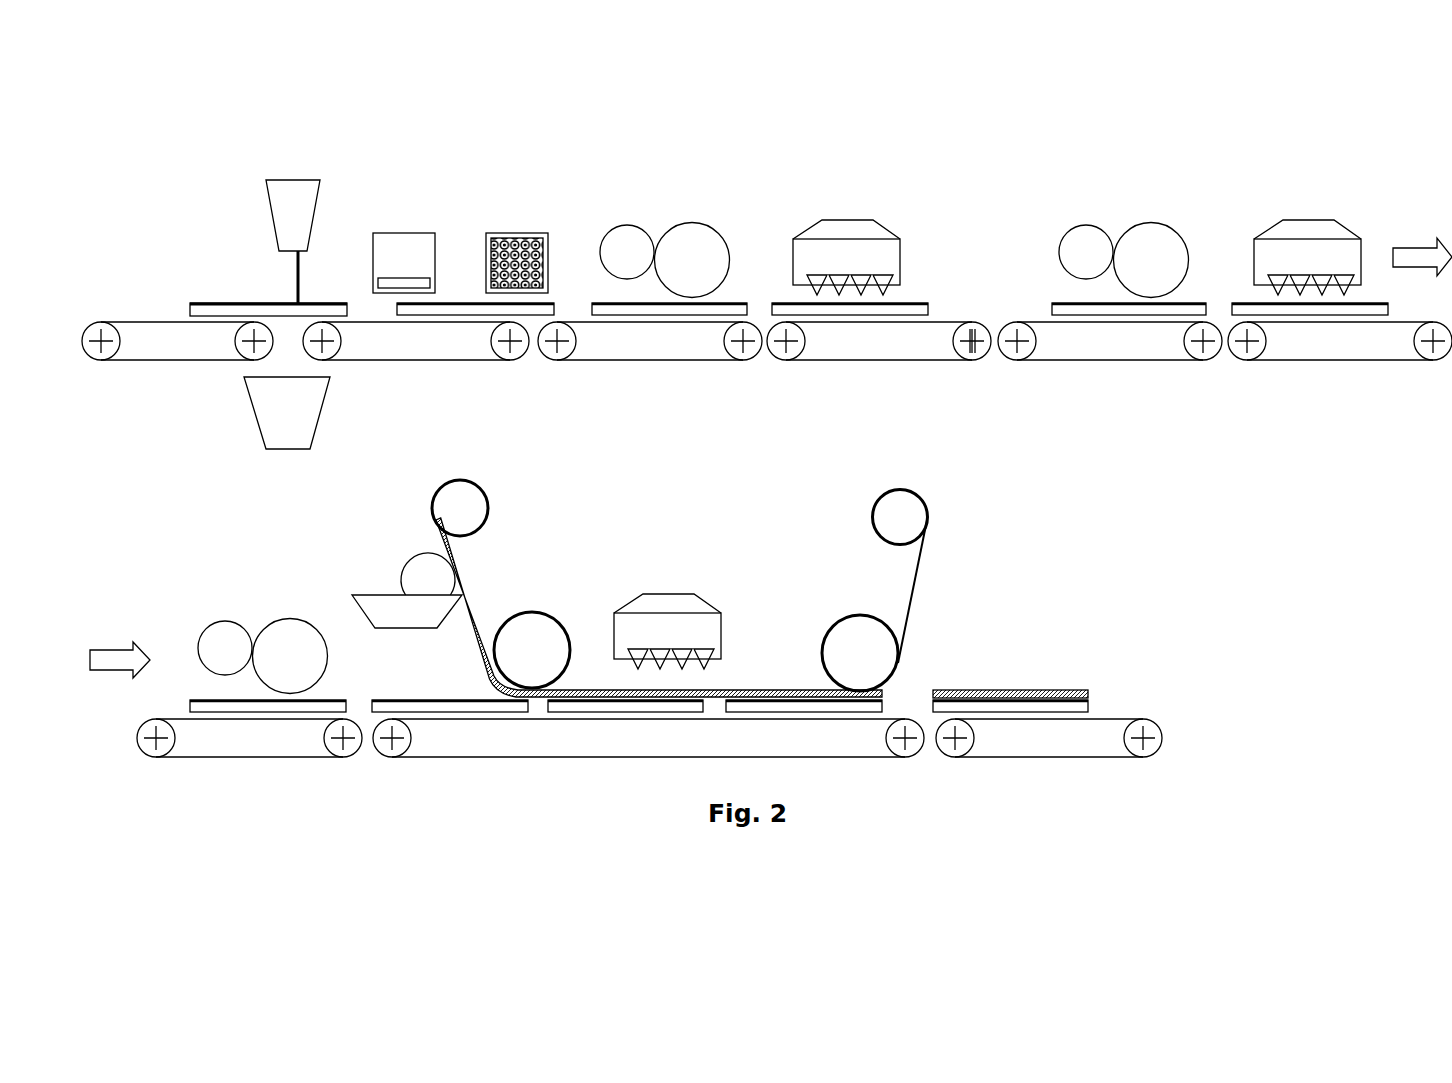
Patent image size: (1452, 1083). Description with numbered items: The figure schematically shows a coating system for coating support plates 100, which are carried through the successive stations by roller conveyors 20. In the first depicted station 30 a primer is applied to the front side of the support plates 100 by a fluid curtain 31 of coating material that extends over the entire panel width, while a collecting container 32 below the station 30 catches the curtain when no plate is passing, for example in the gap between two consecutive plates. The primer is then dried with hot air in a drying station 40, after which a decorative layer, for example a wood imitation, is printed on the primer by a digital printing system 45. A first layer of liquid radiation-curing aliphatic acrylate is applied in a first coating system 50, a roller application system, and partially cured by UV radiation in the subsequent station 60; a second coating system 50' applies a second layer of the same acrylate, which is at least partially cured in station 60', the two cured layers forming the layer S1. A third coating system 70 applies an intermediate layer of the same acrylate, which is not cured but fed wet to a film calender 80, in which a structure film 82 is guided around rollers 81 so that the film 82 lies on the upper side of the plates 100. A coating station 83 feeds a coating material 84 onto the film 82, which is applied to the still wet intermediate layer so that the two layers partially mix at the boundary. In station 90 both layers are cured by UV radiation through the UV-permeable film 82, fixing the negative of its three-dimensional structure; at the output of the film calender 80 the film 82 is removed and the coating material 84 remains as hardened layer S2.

The roller conveyors 20 is at (150, 350).
The primer application station 30 is at (292, 198).
The fluid curtain 31 is at (300, 272).
The collecting container 32 is at (295, 410).
The drying station 40 is at (416, 232).
The digital printing system 45 is at (518, 232).
The first coating system 50 is at (665, 225).
The second coating system 50' is at (1124, 225).
The UV curing station 60 is at (846, 223).
The second UV curing station 60' is at (1307, 223).
The third coating system 70 is at (285, 608).
The film calender 80 is at (965, 536).
The rollers 81 is at (525, 632).
The structure film 82 is at (912, 612).
The coating station 83 is at (422, 578).
The coating material 84 is at (475, 607).
The UV curing station 90 is at (670, 581).
The support plates 100 is at (236, 296).